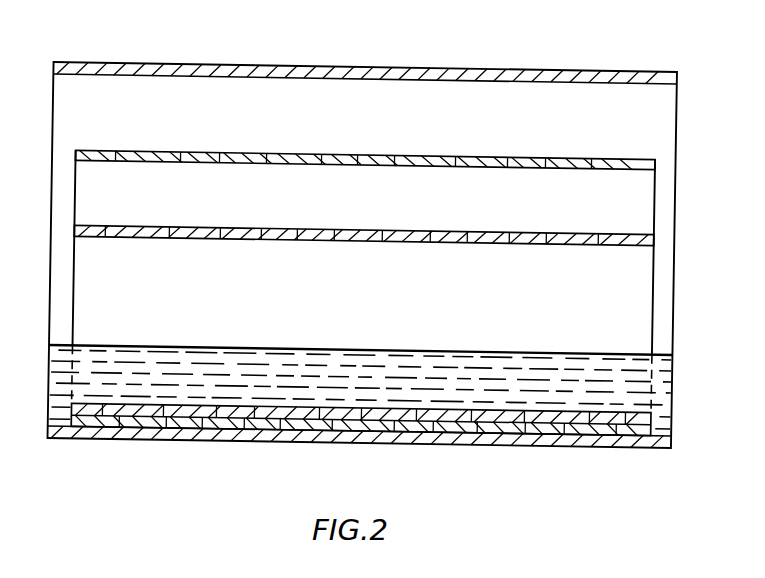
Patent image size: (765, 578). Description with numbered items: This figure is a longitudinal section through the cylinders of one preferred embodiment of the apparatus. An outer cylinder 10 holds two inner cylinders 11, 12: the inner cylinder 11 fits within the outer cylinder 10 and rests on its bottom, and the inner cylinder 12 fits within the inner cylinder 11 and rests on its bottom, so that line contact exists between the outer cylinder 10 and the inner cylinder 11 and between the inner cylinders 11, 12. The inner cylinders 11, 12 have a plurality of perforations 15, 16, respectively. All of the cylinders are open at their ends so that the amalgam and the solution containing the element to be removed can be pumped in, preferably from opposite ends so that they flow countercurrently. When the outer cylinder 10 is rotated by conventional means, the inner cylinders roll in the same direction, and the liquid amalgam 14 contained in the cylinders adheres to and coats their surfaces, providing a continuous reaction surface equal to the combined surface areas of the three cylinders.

The outer cylinder 10 is at (667, 72).
The inner cylinder 11 is at (400, 140).
The inner cylinder 12 is at (398, 217).
The liquid amalgam 14 is at (655, 355).
The perforations 15 is at (383, 155).
The perforations 16 is at (338, 228).